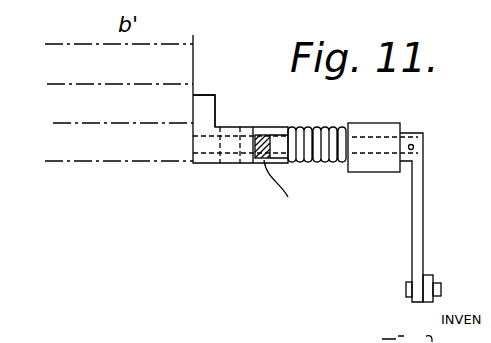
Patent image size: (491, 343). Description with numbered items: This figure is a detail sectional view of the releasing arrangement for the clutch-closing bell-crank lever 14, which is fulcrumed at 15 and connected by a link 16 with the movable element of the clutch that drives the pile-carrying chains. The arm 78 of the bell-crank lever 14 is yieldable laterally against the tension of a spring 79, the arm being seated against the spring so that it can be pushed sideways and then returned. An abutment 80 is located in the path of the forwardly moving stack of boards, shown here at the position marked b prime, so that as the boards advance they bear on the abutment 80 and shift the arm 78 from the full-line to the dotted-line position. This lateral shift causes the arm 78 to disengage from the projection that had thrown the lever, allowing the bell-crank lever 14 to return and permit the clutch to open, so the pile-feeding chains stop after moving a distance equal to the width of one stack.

The bell-crank lever 14 is at (413, 176).
The fulcrum 15 is at (381, 135).
The link 16 is at (430, 217).
The arm 78 is at (259, 133).
The spring 79 is at (317, 127).
The abutment 80 is at (213, 114).